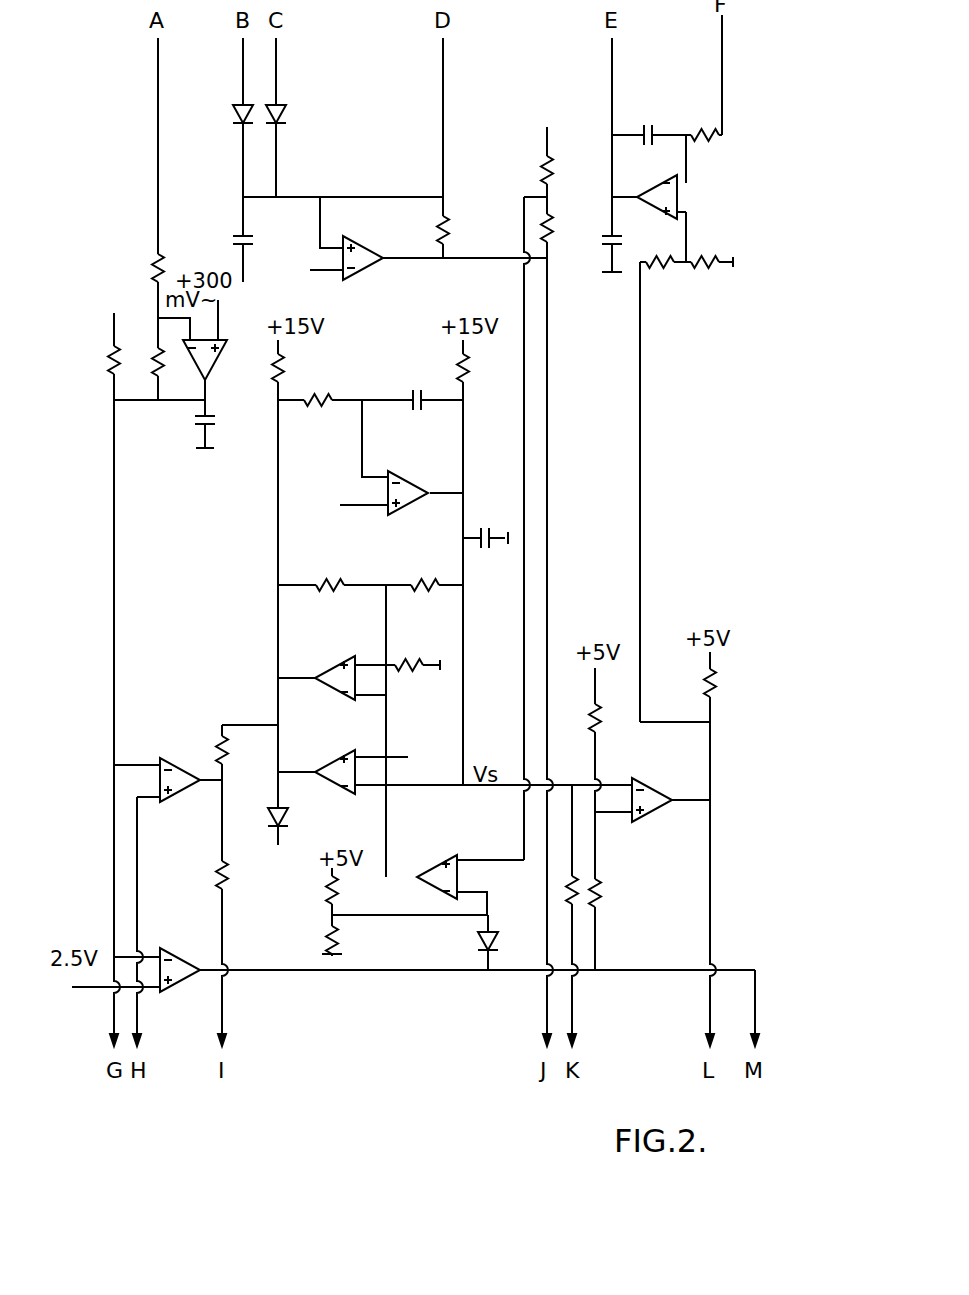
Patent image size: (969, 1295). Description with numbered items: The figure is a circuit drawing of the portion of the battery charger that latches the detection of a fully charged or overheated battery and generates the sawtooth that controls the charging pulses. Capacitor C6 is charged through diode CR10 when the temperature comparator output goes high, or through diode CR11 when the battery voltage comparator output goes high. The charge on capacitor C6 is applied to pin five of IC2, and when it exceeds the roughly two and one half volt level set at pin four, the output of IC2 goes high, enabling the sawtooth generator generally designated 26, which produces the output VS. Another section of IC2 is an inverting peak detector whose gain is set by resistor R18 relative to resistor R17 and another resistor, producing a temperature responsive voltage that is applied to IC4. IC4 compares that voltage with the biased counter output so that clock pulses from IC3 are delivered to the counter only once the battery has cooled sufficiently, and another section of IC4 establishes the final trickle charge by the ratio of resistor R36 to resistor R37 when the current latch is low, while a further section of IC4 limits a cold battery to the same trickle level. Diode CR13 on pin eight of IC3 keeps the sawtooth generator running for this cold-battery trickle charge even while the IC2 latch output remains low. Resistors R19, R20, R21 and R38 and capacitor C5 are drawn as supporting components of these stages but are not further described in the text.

The sawtooth generator 26 is at (271, 504).
The resistor R17 is at (135, 268).
The resistor R18 is at (178, 363).
The resistor R19 is at (90, 676).
The resistor R20 is at (301, 361).
The resistor R21 is at (323, 413).
The resistor R36 is at (616, 773).
The resistor R37 is at (617, 924).
The resistor R38 is at (567, 884).
The capacitor C5 is at (220, 424).
The capacitor C6 is at (259, 241).
The diode CR10 is at (209, 115).
The diode CR11 is at (307, 115).
The diode CR13 is at (455, 941).
The integrated circuit IC2 is at (441, 287).
The integrated circuit IC3 is at (384, 678).
The integrated circuit IC4 is at (414, 885).